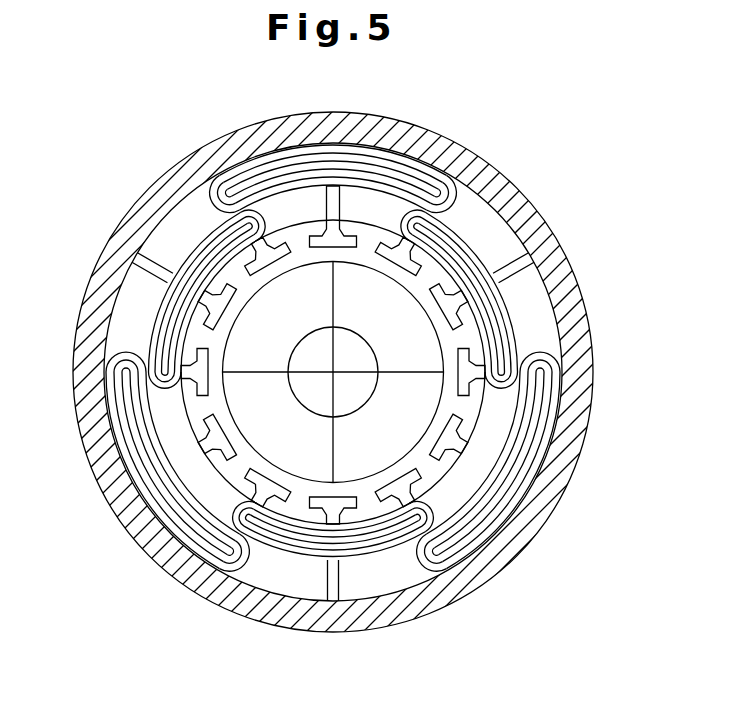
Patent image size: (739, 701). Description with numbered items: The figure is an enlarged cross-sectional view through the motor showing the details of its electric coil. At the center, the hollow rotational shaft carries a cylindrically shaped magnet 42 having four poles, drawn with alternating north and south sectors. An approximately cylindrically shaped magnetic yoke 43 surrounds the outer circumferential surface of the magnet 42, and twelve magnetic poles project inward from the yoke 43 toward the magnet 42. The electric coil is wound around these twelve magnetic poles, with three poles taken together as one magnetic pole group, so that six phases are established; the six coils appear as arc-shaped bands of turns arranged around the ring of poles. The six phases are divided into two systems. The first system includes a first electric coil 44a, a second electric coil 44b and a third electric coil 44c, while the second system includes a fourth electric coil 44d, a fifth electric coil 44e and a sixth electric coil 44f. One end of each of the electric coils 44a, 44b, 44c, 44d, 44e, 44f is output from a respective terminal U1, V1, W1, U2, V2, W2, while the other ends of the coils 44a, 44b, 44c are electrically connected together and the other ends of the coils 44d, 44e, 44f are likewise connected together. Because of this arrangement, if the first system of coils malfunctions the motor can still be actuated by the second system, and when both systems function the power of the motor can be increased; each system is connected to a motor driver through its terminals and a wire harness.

The magnet 42 is at (307, 462).
The magnetic yoke 43 is at (334, 122).
The first electric coil 44a is at (523, 487).
The second electric coil 44b is at (354, 545).
The third electric coil 44c is at (133, 440).
The fourth electric coil 44d is at (192, 257).
The fifth electric coil 44e is at (365, 163).
The sixth electric coil 44f is at (470, 252).
The terminal U1 is at (412, 568).
The terminal U2 is at (280, 192).
The terminal V1 is at (212, 528).
The terminal V2 is at (456, 208).
The terminal W1 is at (123, 345).
The terminal W2 is at (542, 378).